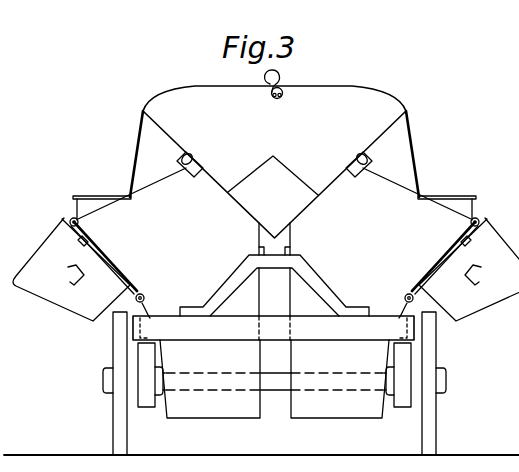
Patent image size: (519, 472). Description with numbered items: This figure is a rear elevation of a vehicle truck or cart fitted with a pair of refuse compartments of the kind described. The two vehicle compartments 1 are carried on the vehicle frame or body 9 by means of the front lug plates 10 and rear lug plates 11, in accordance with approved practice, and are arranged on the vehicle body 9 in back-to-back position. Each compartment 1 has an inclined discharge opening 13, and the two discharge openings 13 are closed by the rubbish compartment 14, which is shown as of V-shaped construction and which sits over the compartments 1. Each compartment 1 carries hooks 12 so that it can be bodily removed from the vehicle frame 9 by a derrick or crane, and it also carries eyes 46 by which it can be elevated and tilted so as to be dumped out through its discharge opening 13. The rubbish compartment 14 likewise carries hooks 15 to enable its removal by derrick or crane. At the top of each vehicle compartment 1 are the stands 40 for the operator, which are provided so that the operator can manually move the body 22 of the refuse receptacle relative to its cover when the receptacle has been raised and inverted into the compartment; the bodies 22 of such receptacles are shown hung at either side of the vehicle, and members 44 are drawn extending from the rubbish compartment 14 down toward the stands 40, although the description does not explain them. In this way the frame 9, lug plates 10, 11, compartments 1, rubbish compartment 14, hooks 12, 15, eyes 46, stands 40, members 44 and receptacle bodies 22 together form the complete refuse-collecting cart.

The vehicle compartment 1 is at (274, 336).
The vehicle frame or body 9 is at (273, 328).
The front lug plates 10 is at (150, 318).
The rear lug plates 11 is at (263, 252).
The hooks 12 is at (203, 155).
The discharge opening 13 is at (273, 164).
The rubbish compartment 14 is at (352, 100).
The hooks 15 is at (285, 82).
The body of receptacle 22 is at (266, 269).
The stands 40 is at (109, 196).
The strut 44 is at (139, 145).
The eyes 46 is at (144, 297).